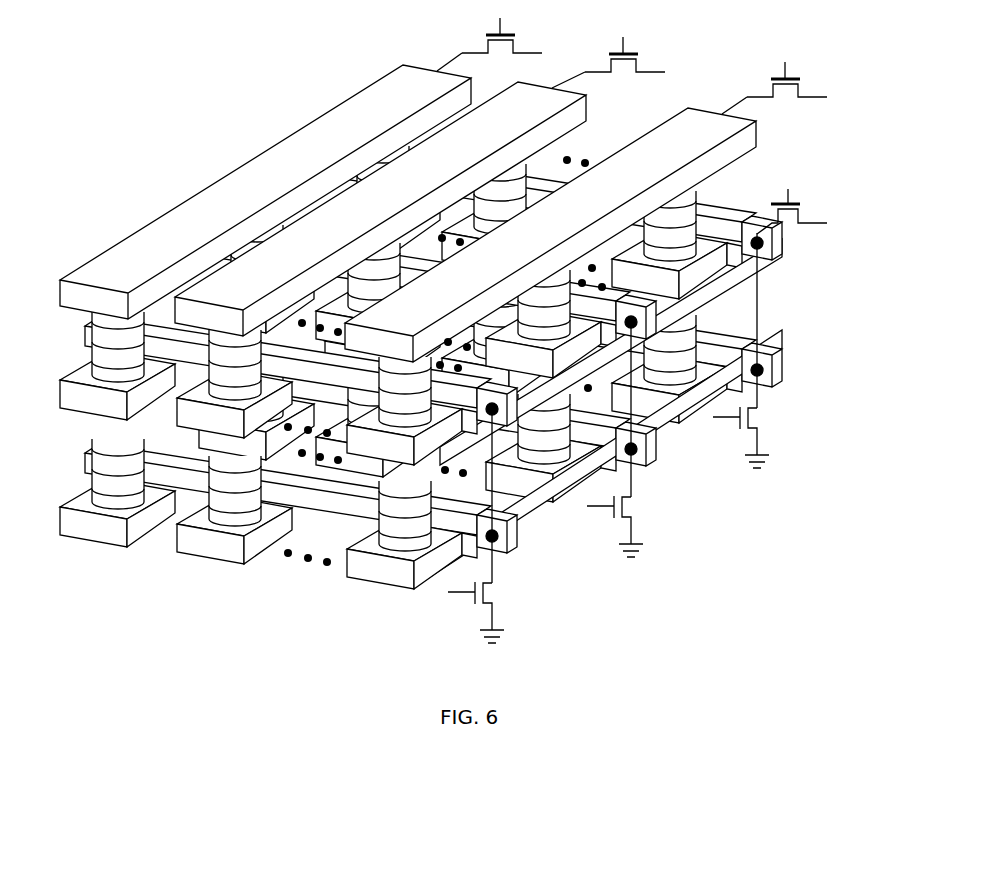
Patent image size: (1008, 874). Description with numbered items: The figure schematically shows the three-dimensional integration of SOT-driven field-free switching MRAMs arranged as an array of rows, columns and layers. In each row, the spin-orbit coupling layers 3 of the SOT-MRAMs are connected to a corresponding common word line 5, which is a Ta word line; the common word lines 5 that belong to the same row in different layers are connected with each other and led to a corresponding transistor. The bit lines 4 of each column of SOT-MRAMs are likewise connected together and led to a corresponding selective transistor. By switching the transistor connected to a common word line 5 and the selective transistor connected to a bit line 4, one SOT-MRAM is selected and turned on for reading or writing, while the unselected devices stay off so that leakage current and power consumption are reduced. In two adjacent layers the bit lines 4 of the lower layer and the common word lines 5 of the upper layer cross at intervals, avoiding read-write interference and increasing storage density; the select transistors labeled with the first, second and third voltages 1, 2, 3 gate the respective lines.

The bit line 4 is at (307, 132).
The common word line 5 is at (507, 532).
The select transistor for voltage V1' 1 is at (508, 45).
The select transistor for voltage V2' 2 is at (631, 64).
The spin-orbit coupling layer 3 is at (796, 149).